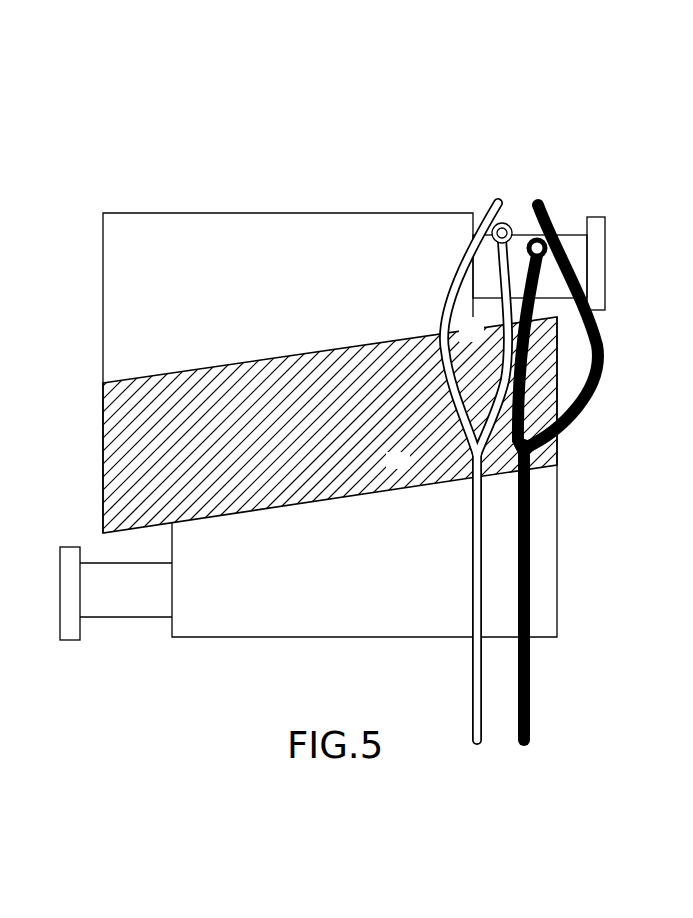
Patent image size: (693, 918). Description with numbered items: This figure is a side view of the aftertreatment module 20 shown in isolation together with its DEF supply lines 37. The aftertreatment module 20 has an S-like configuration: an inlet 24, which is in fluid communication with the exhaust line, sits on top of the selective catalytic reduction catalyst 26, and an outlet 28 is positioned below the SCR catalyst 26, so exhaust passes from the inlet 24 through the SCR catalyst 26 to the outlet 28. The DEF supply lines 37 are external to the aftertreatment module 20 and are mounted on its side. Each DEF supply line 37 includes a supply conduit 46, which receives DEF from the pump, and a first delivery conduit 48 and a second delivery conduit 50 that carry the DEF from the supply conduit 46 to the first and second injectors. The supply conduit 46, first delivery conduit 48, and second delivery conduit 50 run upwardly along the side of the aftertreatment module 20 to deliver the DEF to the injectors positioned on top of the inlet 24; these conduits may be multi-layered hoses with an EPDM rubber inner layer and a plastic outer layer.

The aftertreatment module 20 is at (321, 140).
The inlet 24 is at (575, 245).
The selective catalytic reduction (SCR) catalyst 26 is at (104, 416).
The outlet 28 is at (106, 618).
The DEF supply line 37 is at (453, 465).
The supply conduit 46 is at (473, 537).
The first delivery conduit 48 is at (448, 292).
The second delivery conduit 50 is at (506, 344).